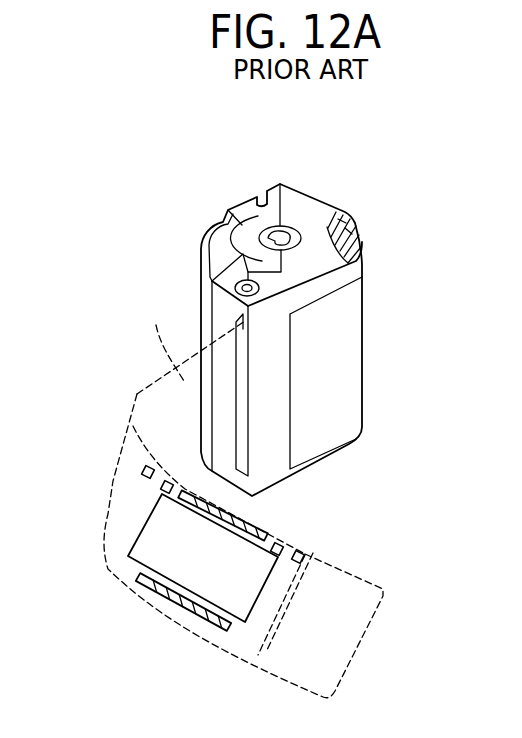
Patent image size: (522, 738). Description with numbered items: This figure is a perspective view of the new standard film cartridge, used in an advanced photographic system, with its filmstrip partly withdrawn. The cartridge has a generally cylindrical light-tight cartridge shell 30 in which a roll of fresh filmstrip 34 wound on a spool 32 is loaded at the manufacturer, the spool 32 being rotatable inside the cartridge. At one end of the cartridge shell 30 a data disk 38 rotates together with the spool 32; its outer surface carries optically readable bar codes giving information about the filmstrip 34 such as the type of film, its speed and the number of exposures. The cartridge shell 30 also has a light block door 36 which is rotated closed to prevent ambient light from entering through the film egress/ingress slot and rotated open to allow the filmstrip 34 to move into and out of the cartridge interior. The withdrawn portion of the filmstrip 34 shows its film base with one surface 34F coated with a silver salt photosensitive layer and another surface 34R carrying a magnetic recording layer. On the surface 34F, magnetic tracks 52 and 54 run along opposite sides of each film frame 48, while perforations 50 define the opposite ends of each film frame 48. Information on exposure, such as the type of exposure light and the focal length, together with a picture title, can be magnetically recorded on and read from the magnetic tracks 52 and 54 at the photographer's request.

The cartridge shell 30 is at (356, 445).
The spool 32 is at (283, 237).
The filmstrip 34 is at (137, 395).
The surface of the film base 34R is at (155, 339).
The surface of the film base 34F is at (102, 516).
The light block door 36 is at (241, 410).
The data disk 38 is at (360, 237).
The film frame 48 is at (170, 557).
The perforations 50 is at (168, 482).
The magnetic track 52 is at (250, 530).
The magnetic track 54 is at (197, 618).